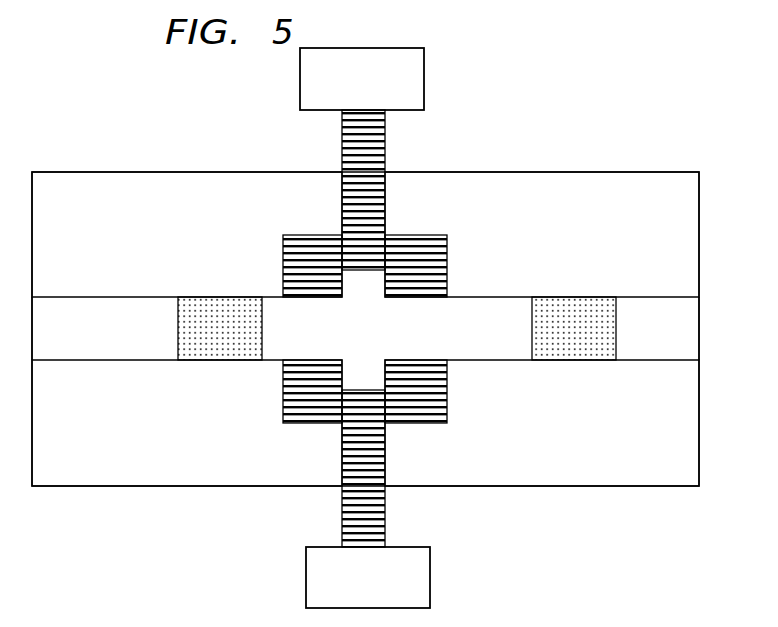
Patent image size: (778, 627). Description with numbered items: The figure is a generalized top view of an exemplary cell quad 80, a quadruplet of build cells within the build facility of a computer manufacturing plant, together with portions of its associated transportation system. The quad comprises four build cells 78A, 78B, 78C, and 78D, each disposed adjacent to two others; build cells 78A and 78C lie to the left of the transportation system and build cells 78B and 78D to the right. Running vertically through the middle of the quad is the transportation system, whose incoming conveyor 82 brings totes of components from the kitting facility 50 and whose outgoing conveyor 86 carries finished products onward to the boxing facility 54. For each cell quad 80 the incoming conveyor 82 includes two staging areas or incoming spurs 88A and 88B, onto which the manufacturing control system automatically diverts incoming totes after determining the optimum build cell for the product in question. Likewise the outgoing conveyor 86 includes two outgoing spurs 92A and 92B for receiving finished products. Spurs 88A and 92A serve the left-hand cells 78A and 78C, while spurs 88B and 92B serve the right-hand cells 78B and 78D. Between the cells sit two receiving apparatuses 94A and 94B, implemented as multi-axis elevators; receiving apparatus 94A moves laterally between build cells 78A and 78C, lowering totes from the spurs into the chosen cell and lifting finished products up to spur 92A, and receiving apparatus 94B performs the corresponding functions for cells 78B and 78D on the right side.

The kitting facility 50 is at (306, 582).
The boxing facility 54 is at (300, 80).
The build cell 78A is at (177, 247).
The build cell 78B is at (593, 247).
The build cell 78C is at (181, 438).
The build cell 78D is at (601, 437).
The cell quad 80 is at (548, 114).
The incoming conveyor 82 is at (387, 509).
The outgoing conveyor 86 is at (385, 207).
The incoming spur 88A is at (283, 393).
The incoming spur 88B is at (447, 392).
The outgoing spur 92A is at (283, 265).
The outgoing spur 92B is at (447, 262).
The receiving apparatus 94A is at (178, 331).
The receiving apparatus 94B is at (616, 329).